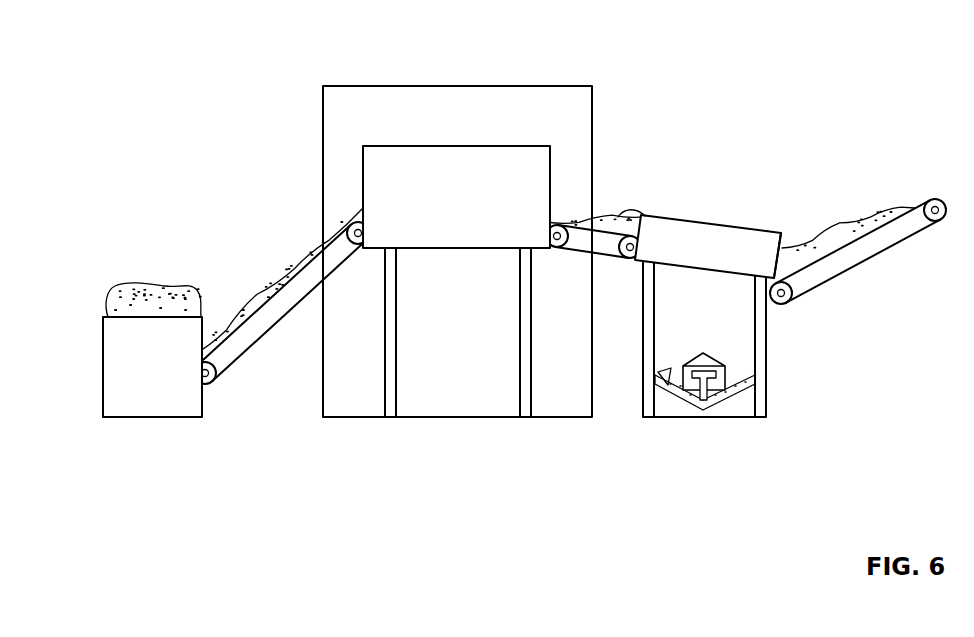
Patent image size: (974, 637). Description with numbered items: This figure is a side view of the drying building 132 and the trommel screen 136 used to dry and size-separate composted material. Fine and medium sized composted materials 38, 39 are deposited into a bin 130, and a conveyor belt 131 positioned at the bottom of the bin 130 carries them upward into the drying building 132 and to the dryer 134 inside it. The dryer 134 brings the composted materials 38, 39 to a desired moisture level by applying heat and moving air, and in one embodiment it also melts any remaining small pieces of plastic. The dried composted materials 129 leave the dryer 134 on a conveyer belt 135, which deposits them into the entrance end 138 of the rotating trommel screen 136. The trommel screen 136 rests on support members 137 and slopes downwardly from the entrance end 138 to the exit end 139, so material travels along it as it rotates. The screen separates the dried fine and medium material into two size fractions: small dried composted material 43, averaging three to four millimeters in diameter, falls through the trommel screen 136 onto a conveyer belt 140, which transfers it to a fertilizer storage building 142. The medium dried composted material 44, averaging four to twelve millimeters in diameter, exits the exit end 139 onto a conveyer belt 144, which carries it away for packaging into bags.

The fine composted material 38 is at (155, 278).
The medium composted material 39 is at (132, 278).
The small dried composted material 43 is at (668, 387).
The medium dried composted material 44 is at (848, 220).
The dried composted materials 129 is at (605, 220).
The bin 130 is at (138, 418).
The conveyor belt 131 is at (233, 363).
The drying building 132 is at (503, 86).
The dryer 134 is at (438, 146).
The conveyer belt 135 is at (605, 257).
The trommel screen 136 is at (715, 223).
The support members 137 is at (767, 335).
The entrance end 138 is at (632, 217).
The exit end 139 is at (795, 237).
The conveyer belt 140 is at (708, 400).
The fertilizer storage building 142 is at (722, 357).
The conveyer belt 144 is at (858, 258).